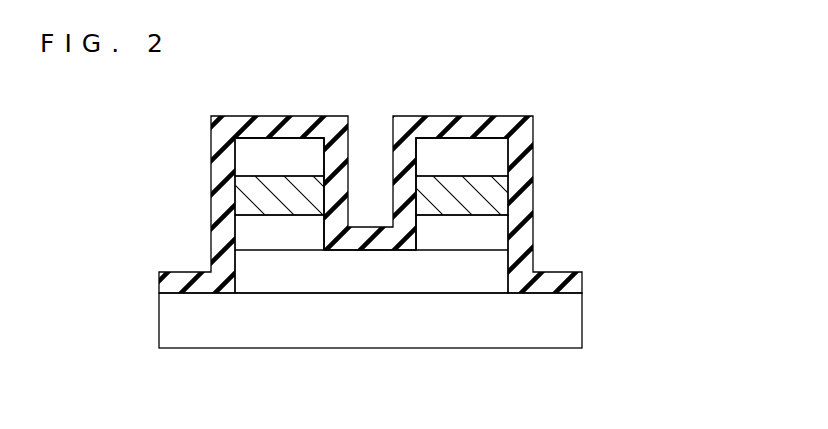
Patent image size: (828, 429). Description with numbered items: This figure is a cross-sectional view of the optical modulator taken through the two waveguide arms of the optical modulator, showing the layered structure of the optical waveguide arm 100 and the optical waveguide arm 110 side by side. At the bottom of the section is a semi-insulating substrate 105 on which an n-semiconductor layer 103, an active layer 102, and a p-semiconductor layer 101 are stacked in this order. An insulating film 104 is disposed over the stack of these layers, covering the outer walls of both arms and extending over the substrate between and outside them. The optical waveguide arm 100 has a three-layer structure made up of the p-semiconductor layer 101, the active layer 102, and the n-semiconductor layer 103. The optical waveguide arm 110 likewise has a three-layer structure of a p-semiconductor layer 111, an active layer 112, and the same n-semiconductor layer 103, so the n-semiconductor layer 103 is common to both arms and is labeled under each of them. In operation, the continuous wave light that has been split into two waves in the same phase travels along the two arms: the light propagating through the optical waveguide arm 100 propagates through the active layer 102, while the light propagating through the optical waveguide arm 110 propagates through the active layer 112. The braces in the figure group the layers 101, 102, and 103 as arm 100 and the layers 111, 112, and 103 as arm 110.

The optical waveguide arm 100 is at (148, 139).
The p-semiconductor layer 101 is at (240, 153).
The active layer 102 is at (240, 191).
The n-semiconductor layer 103 is at (240, 231).
The insulating film 104 is at (172, 279).
The semi-insulating substrate 105 is at (172, 315).
The optical waveguide arm 110 is at (591, 141).
The p-semiconductor layer 111 is at (497, 157).
The active layer 112 is at (497, 196).